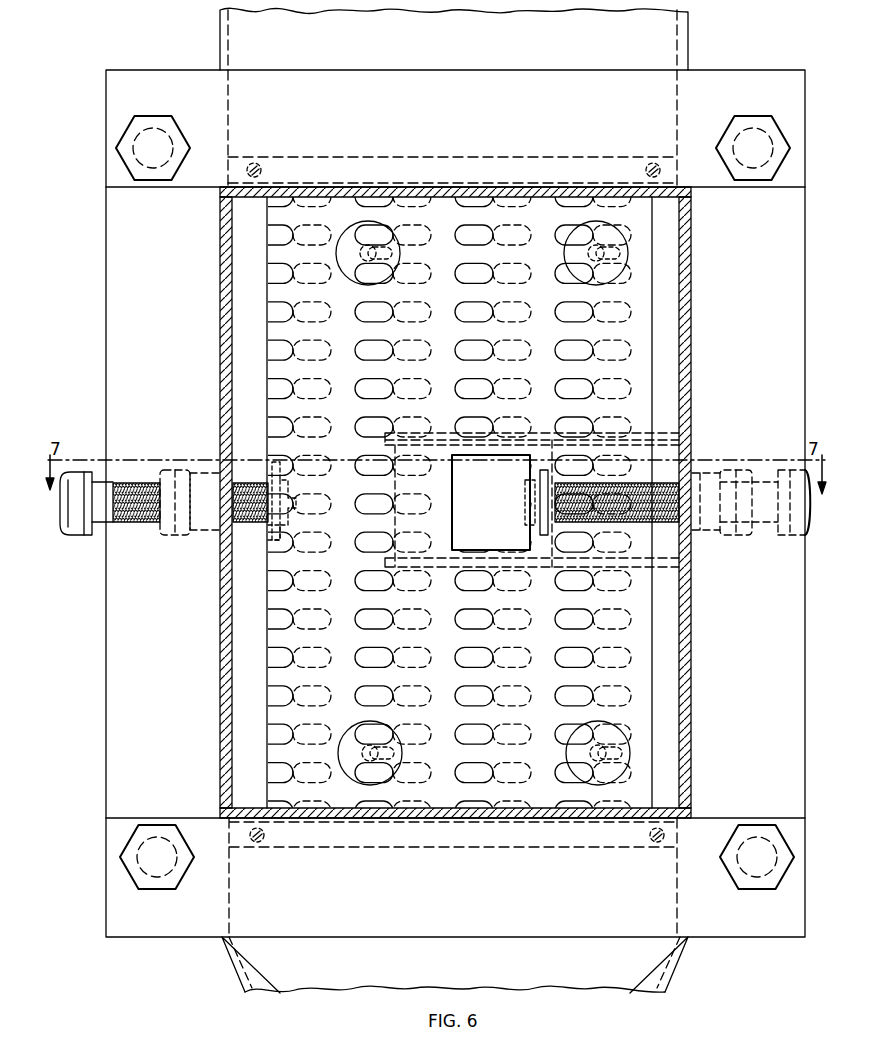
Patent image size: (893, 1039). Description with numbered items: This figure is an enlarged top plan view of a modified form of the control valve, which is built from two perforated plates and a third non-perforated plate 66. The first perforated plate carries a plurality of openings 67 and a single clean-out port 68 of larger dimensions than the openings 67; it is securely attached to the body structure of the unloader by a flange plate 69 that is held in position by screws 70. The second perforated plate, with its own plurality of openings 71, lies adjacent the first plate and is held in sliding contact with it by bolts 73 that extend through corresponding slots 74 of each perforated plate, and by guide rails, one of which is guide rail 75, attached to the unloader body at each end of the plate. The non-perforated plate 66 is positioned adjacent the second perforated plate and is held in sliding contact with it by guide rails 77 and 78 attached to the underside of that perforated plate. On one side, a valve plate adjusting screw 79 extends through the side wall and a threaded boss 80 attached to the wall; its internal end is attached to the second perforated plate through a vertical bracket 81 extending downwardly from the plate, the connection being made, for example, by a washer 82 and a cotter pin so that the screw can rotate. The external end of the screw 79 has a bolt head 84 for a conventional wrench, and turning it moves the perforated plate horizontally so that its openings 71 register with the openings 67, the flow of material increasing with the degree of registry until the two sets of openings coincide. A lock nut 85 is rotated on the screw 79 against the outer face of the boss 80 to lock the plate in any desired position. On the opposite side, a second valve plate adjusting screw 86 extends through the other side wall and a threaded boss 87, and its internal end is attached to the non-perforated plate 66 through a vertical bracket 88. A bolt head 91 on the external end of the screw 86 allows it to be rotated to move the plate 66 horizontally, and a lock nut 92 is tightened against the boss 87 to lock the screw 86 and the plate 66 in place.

The non-perforated plate 66 is at (448, 504).
The openings 67 is at (372, 378).
The clean-out port 68 is at (462, 545).
The flange plate 69 is at (421, 177).
The screws 70 is at (255, 162).
The openings 71 is at (415, 381).
The bolts 73 is at (336, 255).
The slots 74 is at (378, 257).
The guide rail 75 is at (473, 185).
The guide rail 77 is at (640, 570).
The guide rail 78 is at (542, 432).
The valve plate adjusting screw 79 is at (100, 523).
The threaded boss 80 is at (205, 531).
The vertical bracket 81 is at (283, 541).
The washer 82 is at (290, 490).
The bolt head 84 is at (70, 536).
The lock nut 85 is at (165, 536).
The second valve plate adjusting screw 86 is at (645, 524).
The threaded boss 87 is at (705, 531).
The vertical bracket 88 is at (545, 537).
The bolt head 91 is at (790, 536).
The lock nut 92 is at (738, 536).